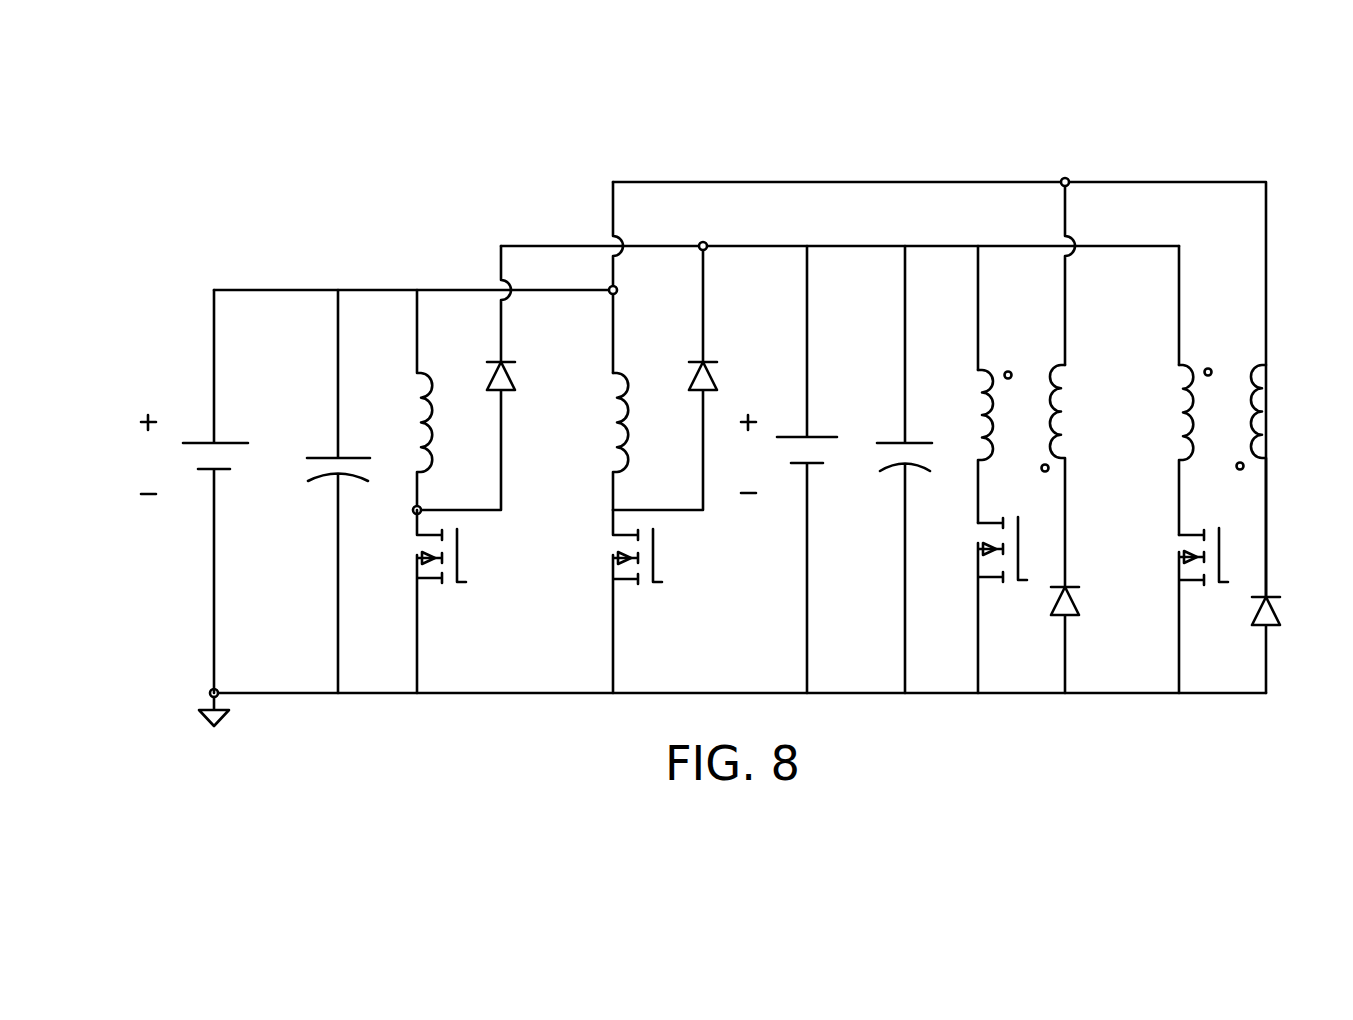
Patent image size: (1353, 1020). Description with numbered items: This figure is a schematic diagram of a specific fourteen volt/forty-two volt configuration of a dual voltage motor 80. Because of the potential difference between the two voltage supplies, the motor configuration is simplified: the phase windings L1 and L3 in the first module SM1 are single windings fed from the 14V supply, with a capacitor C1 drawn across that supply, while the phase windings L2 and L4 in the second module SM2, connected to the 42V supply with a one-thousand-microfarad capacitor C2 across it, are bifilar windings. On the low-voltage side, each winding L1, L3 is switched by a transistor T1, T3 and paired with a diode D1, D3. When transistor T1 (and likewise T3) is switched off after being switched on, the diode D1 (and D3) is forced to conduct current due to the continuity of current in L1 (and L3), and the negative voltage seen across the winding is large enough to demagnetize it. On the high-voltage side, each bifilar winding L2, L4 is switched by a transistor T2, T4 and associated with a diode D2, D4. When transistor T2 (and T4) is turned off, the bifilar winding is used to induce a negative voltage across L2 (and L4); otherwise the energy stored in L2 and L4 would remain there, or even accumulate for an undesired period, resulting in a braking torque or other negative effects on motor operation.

The motor 80 is at (388, 163).
The 14 Volt supply 14V is at (186, 491).
The 42 Volt supply 42V is at (781, 469).
The capacitor C1 is at (324, 491).
The capacitor C2 is at (872, 469).
The phase winding L1 is at (447, 400).
The phase winding L2 is at (1021, 476).
The phase winding L3 is at (646, 441).
The phase winding L4 is at (1222, 481).
The diode D1 is at (489, 432).
The diode D2 is at (1088, 640).
The diode D3 is at (688, 429).
The diode D4 is at (1291, 645).
The transistor T1 is at (420, 601).
The transistor T2 is at (980, 605).
The transistor T3 is at (615, 601).
The transistor T4 is at (1180, 610).
The switching module SM1 is at (590, 456).
The switching module SM2 is at (1150, 452).